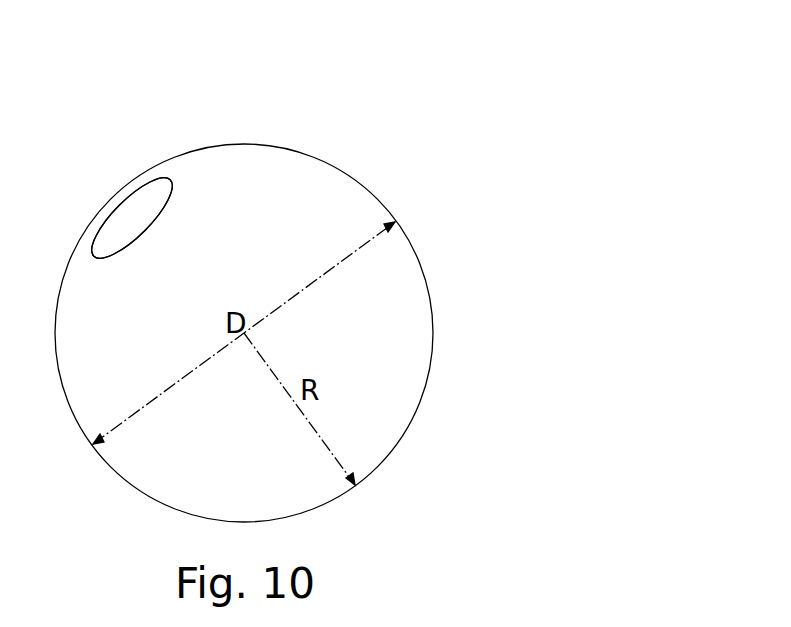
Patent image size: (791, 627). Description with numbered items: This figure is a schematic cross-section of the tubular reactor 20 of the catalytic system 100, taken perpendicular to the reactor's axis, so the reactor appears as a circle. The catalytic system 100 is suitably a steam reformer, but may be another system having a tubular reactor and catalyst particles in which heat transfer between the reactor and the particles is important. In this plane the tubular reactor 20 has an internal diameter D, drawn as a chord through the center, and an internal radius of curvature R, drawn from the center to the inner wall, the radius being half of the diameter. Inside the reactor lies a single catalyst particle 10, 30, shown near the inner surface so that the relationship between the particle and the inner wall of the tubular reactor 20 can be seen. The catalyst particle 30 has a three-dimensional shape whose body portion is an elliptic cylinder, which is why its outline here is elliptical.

The catalytic system 100 is at (316, 104).
The tubular reactor 20 is at (352, 175).
The catalyst particle 10 is at (160, 215).
The catalyst particle 30 is at (132, 218).